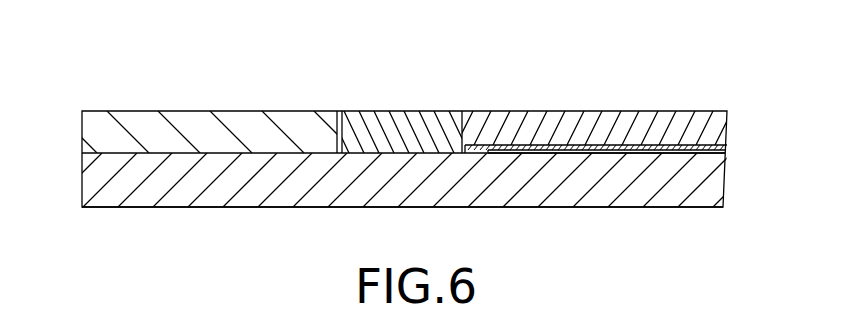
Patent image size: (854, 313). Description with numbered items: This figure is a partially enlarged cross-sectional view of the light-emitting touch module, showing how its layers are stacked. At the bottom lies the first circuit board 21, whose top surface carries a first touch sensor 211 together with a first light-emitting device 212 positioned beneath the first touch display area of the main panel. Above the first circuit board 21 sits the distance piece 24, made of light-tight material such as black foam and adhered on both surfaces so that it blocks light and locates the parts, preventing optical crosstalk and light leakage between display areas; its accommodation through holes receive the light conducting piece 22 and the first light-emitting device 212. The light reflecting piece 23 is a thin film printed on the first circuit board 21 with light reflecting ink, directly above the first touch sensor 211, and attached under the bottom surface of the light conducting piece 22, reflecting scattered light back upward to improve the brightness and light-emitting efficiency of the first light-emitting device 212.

The first circuit board 21 is at (95, 174).
The first touch sensor 211 is at (727, 152).
The first light-emitting device 212 is at (371, 124).
The light conducting piece 22 is at (635, 125).
The light reflecting piece 23 is at (727, 147).
The distance piece 24 is at (138, 129).